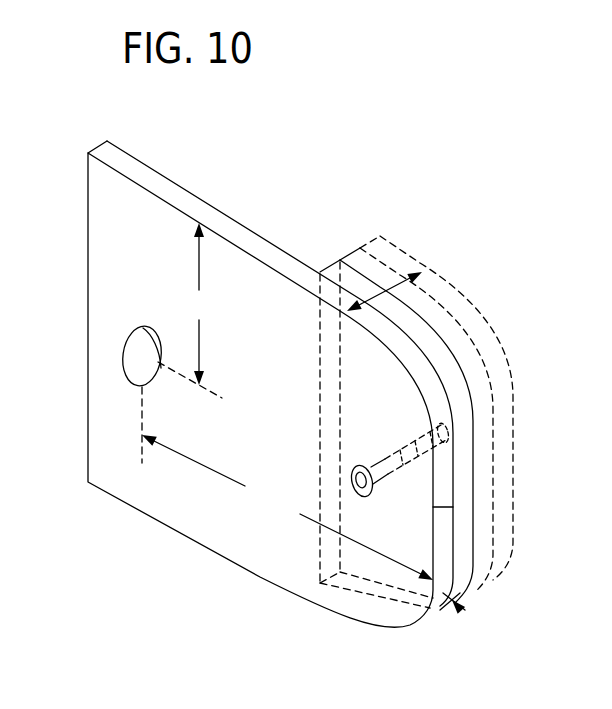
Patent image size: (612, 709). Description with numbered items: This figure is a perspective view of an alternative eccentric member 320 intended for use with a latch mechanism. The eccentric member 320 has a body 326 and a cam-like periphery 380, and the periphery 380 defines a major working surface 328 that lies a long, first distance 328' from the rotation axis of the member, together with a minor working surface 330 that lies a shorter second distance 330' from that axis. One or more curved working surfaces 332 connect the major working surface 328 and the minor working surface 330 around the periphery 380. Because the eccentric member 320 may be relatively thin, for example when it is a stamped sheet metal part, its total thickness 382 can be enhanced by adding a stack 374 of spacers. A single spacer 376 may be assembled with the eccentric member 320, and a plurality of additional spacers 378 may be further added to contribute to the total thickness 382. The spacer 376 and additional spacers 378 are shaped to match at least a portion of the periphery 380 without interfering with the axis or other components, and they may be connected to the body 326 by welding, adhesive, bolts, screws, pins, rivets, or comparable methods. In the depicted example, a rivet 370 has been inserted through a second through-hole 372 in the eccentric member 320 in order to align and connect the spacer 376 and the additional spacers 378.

The eccentric member 320 is at (290, 173).
The body 326 is at (298, 367).
The major working surface 328 is at (497, 524).
The first distance 328' is at (287, 507).
The minor working surface 330 is at (266, 367).
The second distance 330' is at (200, 304).
The curved working surface 332 is at (405, 628).
The rivet 370 is at (373, 477).
The second through-hole 372 is at (376, 462).
The stack of spacers 374 is at (365, 226).
The spacer 376 is at (458, 392).
The additional spacers 378 is at (480, 360).
The periphery 380 is at (461, 610).
The total thickness 382 is at (385, 290).